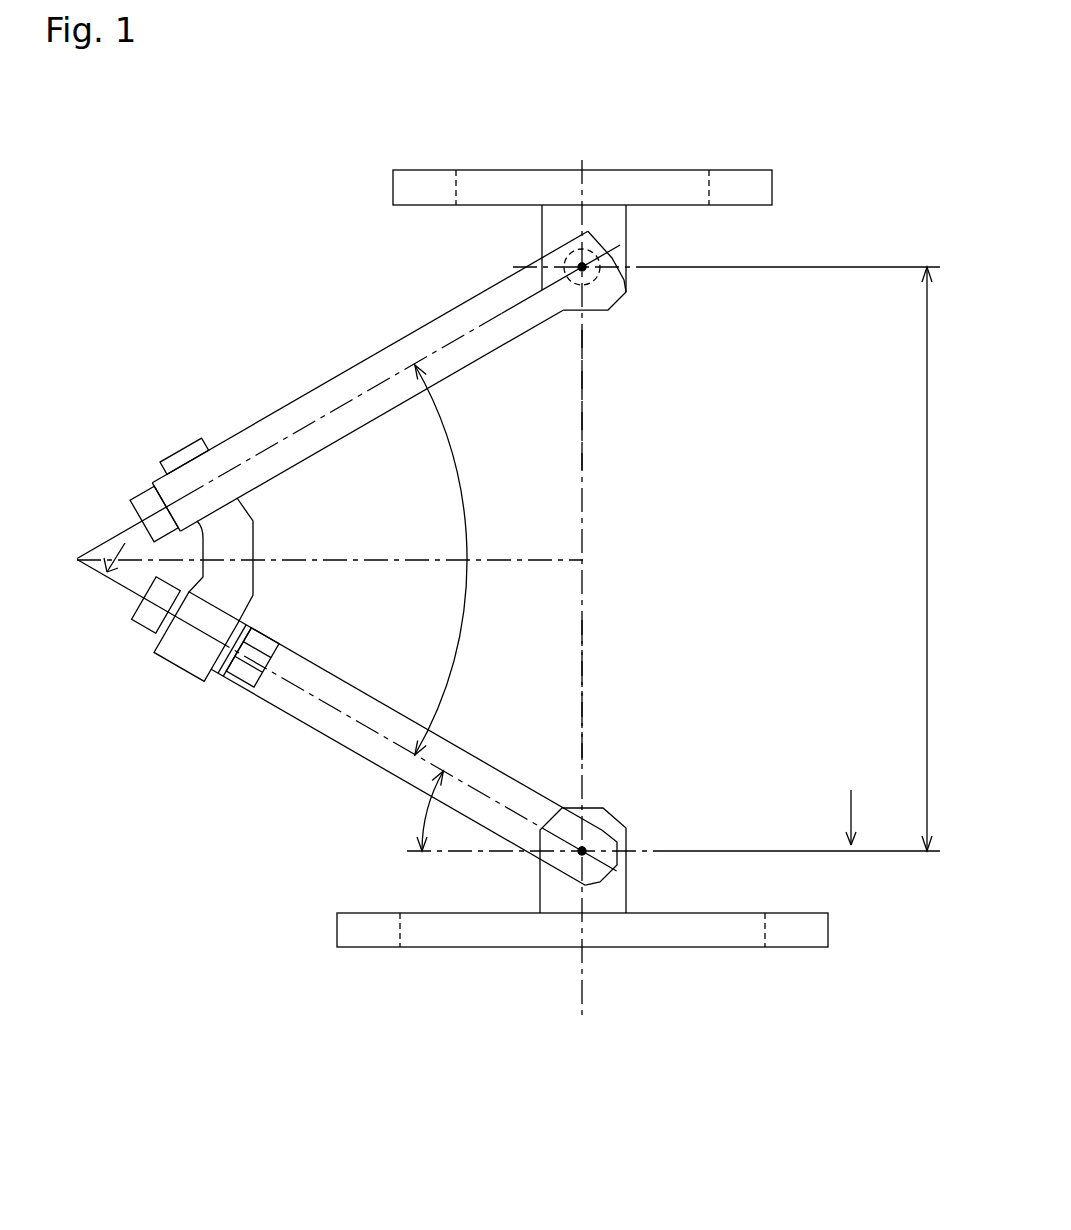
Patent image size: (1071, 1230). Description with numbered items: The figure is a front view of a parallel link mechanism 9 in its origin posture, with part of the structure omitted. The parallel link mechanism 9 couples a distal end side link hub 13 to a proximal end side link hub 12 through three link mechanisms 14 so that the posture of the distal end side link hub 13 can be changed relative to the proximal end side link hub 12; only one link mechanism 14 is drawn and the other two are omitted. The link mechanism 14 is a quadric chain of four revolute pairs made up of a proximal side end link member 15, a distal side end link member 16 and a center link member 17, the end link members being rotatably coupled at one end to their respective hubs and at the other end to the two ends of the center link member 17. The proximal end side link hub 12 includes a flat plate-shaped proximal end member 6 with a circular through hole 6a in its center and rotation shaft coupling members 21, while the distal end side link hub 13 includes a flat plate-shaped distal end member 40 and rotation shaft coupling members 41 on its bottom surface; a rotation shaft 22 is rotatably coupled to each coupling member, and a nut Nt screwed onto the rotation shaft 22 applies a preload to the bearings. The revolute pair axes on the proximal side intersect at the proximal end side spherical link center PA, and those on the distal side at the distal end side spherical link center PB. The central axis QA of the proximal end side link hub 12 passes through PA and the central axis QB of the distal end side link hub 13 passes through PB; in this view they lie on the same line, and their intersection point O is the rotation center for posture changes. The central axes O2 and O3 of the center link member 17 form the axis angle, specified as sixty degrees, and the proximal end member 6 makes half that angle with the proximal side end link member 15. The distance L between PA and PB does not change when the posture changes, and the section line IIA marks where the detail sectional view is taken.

The parallel link mechanism 9 is at (190, 211).
The distal end side link hub 13 is at (290, 200).
The distal end member 40 is at (402, 197).
The rotation shaft coupling member 41 is at (548, 228).
The distal side end link member 16 is at (262, 430).
The rotation shaft 22 is at (597, 252).
The distal end side spherical link center PB is at (590, 262).
The proximal end side spherical link center PA is at (608, 832).
The point of intersection O is at (588, 550).
The central axis O2 is at (120, 588).
The central axis O3 is at (107, 543).
The central axis QB is at (586, 398).
The central axis QA is at (586, 660).
The link mechanism 14 is at (264, 735).
The proximal side end link member 15 is at (373, 750).
The center link member 17 is at (187, 657).
The nut Nt is at (245, 655).
The proximal end side link hub 12 is at (258, 968).
The proximal end member 6 is at (372, 937).
The through hole 6a is at (770, 938).
The rotation shaft coupling member 21 is at (552, 908).
The distance L is at (913, 559).
The section line II A IIA is at (458, 649).